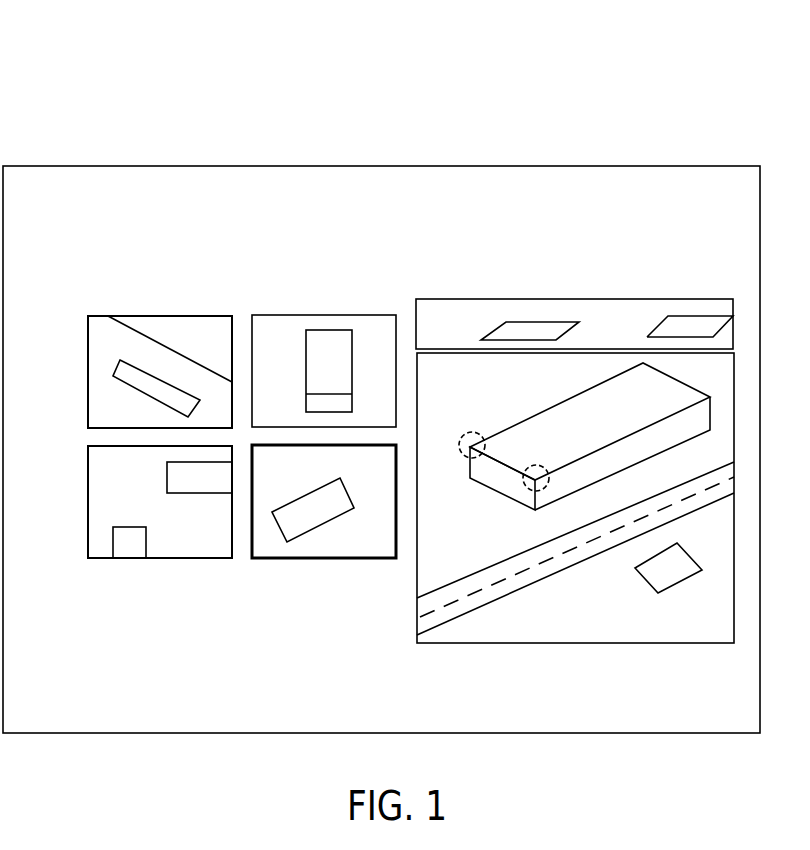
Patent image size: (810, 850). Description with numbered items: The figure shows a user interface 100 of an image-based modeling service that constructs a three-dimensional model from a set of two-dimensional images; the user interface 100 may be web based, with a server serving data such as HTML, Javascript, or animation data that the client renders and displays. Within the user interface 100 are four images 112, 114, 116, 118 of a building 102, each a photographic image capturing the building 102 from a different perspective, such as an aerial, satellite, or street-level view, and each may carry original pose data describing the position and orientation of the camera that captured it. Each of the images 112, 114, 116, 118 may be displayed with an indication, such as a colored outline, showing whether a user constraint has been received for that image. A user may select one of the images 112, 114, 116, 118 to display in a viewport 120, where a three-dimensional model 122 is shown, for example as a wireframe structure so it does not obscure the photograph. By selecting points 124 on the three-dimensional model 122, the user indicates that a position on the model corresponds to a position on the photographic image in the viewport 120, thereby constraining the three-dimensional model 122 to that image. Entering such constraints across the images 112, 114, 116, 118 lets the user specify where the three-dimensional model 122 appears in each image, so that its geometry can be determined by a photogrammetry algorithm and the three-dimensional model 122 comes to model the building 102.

The user interface 100 is at (152, 119).
The building 102 is at (122, 371).
The image 112 is at (139, 418).
The image 114 is at (139, 481).
The image 116 is at (301, 422).
The image 118 is at (305, 482).
The viewport 120 is at (468, 337).
The three-dimensional model 122 is at (623, 380).
The points 124 is at (525, 478).